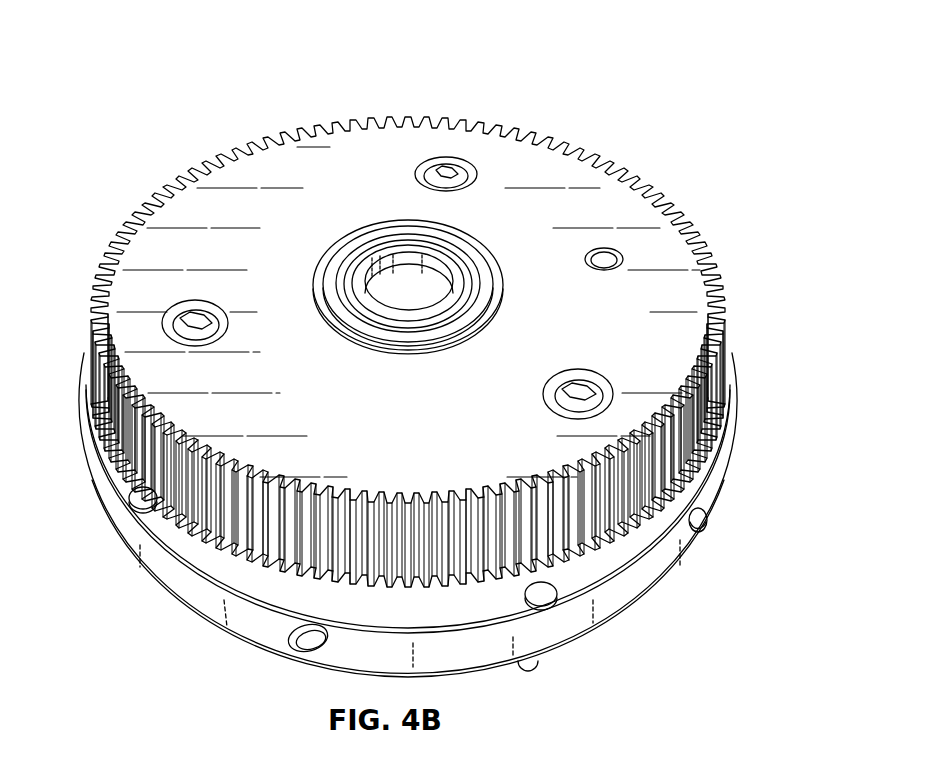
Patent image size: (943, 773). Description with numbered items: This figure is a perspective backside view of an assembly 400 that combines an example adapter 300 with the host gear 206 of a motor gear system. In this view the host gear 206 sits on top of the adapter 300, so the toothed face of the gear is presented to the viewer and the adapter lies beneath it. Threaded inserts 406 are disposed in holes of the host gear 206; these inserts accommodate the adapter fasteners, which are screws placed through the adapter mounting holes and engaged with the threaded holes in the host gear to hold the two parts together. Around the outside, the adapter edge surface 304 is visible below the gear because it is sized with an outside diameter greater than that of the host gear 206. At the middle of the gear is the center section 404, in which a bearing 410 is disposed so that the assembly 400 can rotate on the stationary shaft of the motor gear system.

The assembly 400 is at (432, 343).
The host gear 206 is at (590, 148).
The adapter 300 is at (432, 515).
The adapter edge surface 304 is at (125, 530).
The center section 404 is at (443, 255).
The threaded inserts 406 is at (433, 160).
The bearing 410 is at (343, 268).